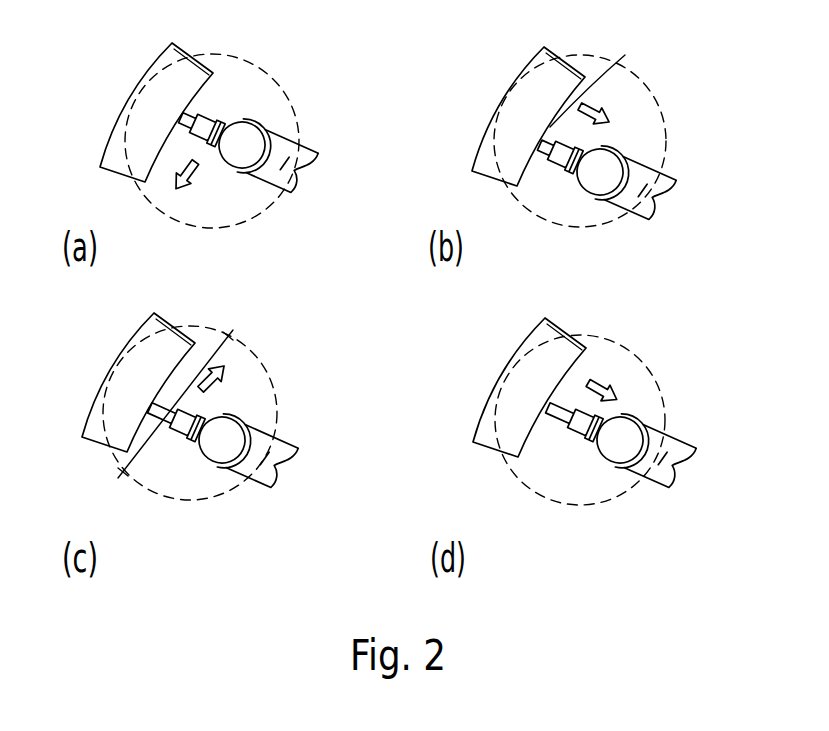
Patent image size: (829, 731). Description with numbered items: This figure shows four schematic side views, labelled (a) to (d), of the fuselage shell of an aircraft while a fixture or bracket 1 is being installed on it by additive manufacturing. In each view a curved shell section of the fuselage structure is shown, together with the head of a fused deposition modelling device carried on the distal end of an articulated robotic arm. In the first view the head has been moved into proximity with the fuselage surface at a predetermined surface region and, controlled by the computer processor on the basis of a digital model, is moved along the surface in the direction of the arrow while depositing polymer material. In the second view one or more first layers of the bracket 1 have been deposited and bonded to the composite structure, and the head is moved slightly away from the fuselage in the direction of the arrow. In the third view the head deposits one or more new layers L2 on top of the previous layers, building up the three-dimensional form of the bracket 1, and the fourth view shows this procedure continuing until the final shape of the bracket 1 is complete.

The fixture or bracket 1 is at (601, 423).
The new layers L2 is at (123, 506).